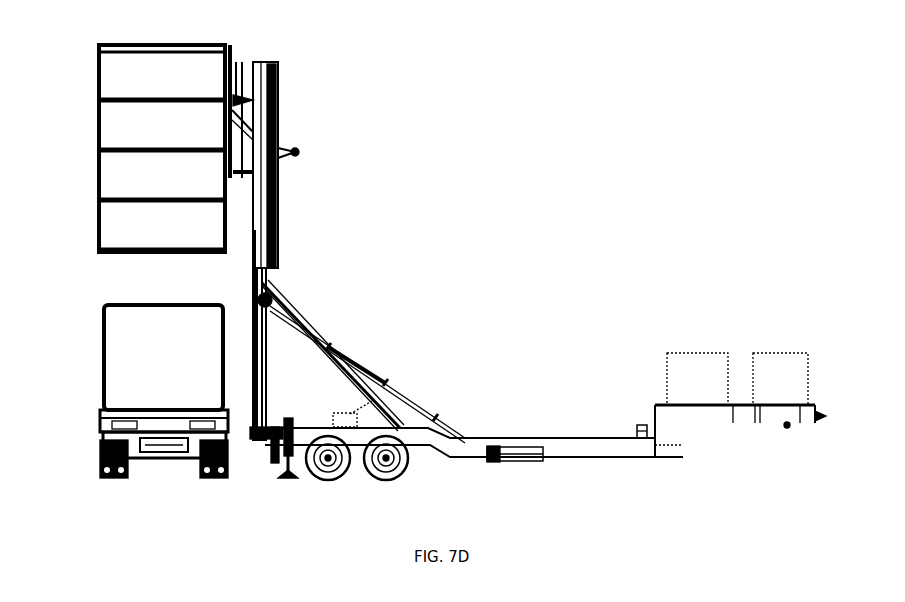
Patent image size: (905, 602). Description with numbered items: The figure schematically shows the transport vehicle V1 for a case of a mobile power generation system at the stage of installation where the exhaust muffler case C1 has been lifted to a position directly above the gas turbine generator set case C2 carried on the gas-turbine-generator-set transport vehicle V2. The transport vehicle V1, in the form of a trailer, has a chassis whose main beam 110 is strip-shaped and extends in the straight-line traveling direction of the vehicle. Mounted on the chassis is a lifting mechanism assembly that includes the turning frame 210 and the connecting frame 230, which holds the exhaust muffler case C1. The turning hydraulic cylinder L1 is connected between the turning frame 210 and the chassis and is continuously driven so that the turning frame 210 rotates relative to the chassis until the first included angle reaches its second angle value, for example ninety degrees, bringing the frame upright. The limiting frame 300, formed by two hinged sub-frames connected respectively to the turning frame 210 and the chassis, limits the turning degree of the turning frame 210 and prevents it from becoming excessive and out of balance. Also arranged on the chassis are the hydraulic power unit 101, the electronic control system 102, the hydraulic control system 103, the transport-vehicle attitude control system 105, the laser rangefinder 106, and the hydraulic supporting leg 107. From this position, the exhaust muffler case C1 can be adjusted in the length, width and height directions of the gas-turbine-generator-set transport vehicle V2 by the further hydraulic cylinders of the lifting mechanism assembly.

The exhaust muffler case C1 is at (145, 131).
The gas turbine generator set case C2 is at (135, 357).
The transport vehicle V1 is at (832, 443).
The gas-turbine-generator-set transport vehicle V2 is at (122, 444).
The connecting frame 230 is at (236, 70).
The turning frame 210 is at (271, 231).
The limiting frame 300 is at (268, 300).
The turning hydraulic cylinder L1 is at (360, 365).
The transport-vehicle attitude control system 105 is at (386, 383).
The hydraulic supporting leg 107 is at (289, 418).
The laser rangefinder 106 is at (258, 446).
The main beam 110 is at (555, 438).
The hydraulic control system 103 is at (647, 410).
The electronic control system 102 is at (688, 372).
The hydraulic power unit 101 is at (764, 368).